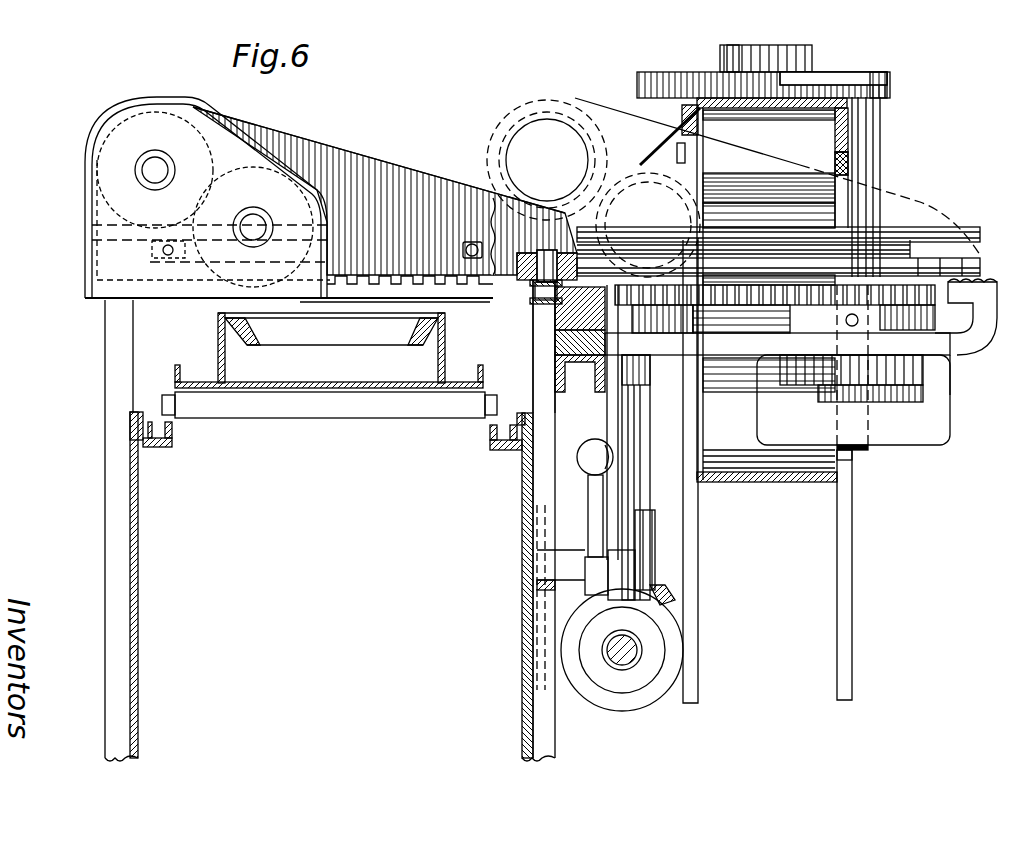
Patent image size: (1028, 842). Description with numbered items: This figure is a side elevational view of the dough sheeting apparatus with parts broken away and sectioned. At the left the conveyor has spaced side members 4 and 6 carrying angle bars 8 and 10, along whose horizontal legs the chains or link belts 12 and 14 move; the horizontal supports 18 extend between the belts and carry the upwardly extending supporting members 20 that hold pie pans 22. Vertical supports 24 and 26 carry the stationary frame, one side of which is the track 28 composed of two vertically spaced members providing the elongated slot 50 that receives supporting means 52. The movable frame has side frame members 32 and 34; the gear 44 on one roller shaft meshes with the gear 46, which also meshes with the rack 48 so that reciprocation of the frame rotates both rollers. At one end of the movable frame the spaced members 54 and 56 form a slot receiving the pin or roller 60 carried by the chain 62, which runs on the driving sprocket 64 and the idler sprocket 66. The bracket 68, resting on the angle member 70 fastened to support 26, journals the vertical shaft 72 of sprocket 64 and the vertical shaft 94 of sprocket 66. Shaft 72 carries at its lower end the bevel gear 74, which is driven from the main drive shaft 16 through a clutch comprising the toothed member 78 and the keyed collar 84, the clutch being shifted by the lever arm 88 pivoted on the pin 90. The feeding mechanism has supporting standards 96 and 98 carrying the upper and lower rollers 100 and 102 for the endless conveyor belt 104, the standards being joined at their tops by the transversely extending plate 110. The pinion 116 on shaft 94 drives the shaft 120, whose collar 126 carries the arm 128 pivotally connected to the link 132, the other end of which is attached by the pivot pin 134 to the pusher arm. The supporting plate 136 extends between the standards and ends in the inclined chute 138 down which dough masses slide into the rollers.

The side member 4 is at (137, 603).
The side member 6 is at (530, 630).
The angle bar 8 is at (160, 452).
The angle bar 10 is at (490, 452).
The chain or link belt 12 is at (173, 432).
The chain or link belt 14 is at (488, 437).
The main drive shaft 16 is at (627, 660).
The horizontal support 18 is at (357, 413).
The supporting member 20 is at (217, 347).
The pie pan 22 is at (315, 338).
The vertical support 24 is at (105, 470).
The vertical support 26 is at (552, 737).
The track 28 is at (655, 228).
The side frame member 32 is at (520, 207).
The side frame member 34 is at (388, 165).
The gear 44 is at (125, 120).
The gear 46 is at (228, 178).
The rack 48 is at (455, 293).
The elongated slot 50 is at (802, 242).
The supporting means 52 is at (85, 257).
The spaced member 54 is at (530, 282).
The spaced member 56 is at (585, 255).
The pin or roller 60 is at (548, 252).
The chain or link belt 62 is at (545, 302).
The driving sprocket 64 is at (680, 333).
The idler sprocket 66 is at (818, 325).
The bracket 68 is at (972, 353).
The angle member 70 is at (573, 387).
The vertical shaft 72 is at (637, 463).
The bevel gear 74 is at (662, 594).
The toothed member 78 is at (680, 660).
The collar 84 is at (625, 708).
The lever arm 88 is at (600, 493).
The pin 90 is at (567, 567).
The vertically extending shaft 94 is at (837, 422).
The supporting standard 96 is at (697, 530).
The supporting standard 98 is at (835, 530).
The upper roller 100 is at (828, 135).
The lower roller 102 is at (848, 457).
The endless conveyor belt 104 is at (778, 480).
The transversely extending plate 110 is at (676, 74).
The pinion 116 is at (893, 385).
The shaft 120 is at (880, 165).
The collar 126 is at (890, 88).
The arm 128 is at (833, 75).
The arm or link 132 is at (770, 47).
The pivot pin 134 is at (735, 50).
The supporting plate 136 is at (828, 133).
The inclined chute 138 is at (655, 148).